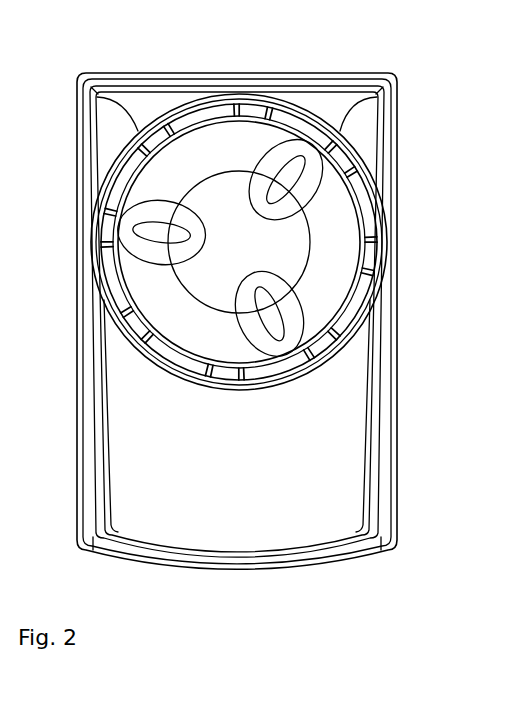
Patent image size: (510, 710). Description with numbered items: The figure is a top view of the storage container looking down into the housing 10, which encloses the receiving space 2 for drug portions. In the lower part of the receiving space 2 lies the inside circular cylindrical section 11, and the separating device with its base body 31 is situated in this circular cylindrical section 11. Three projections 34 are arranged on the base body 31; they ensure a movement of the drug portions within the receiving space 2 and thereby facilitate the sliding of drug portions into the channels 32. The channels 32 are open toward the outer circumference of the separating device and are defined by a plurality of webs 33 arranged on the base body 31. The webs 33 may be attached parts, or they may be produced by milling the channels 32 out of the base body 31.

The receiving space 2 is at (227, 448).
The housing 10 is at (227, 569).
The inside circular cylindrical section 11 is at (100, 167).
The base body 31 is at (190, 323).
The channels 32 is at (83, 86).
The webs 33 is at (192, 110).
The projections 34 is at (153, 232).